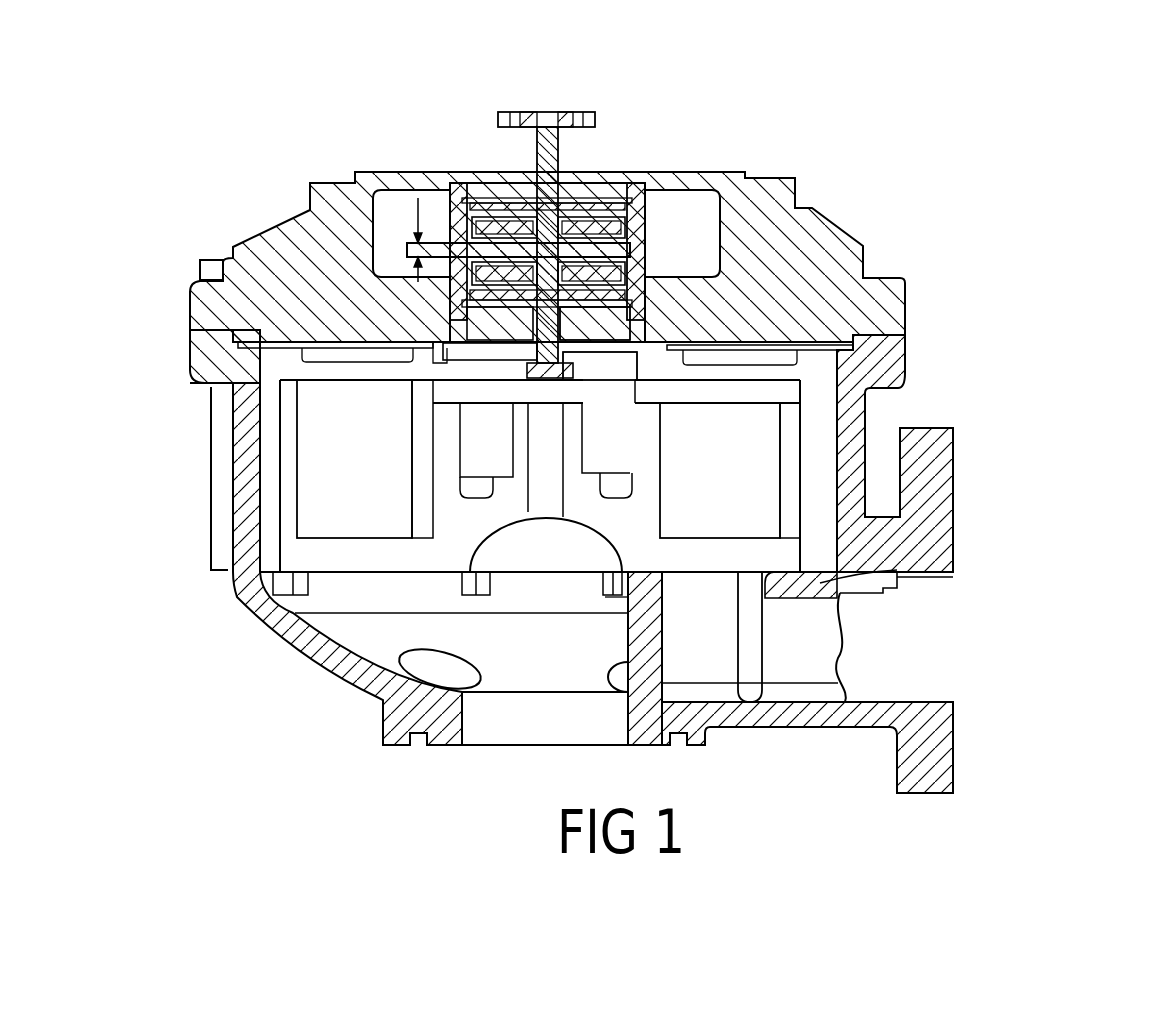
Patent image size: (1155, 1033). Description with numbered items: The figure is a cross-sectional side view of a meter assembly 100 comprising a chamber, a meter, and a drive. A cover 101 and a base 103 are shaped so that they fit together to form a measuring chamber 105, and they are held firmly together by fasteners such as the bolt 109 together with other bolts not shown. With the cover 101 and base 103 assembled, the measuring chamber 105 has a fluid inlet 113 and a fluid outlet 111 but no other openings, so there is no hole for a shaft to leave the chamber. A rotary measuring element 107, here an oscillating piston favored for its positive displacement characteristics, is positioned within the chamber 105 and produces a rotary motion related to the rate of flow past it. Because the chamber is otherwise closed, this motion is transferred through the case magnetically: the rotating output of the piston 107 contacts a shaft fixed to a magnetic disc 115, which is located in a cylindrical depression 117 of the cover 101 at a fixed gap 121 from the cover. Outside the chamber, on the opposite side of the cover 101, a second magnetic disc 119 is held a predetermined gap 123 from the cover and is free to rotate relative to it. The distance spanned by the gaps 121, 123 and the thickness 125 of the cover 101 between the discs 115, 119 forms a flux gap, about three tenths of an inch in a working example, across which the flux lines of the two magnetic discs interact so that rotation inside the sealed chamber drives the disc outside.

The flow meter 100 is at (202, 157).
The cover 101 is at (260, 303).
The base 103 is at (247, 507).
The measuring chamber 105 is at (817, 438).
The rotary measuring element 107 is at (777, 393).
The bolt 109 is at (200, 268).
The fluid outlet 111 is at (937, 645).
The fluid inlet 113 is at (538, 732).
The magnetic disc 115 is at (660, 318).
The cylindrical depression 117 is at (597, 322).
The second magnetic disc 119 is at (600, 238).
The gap 121 is at (470, 252).
The gap 123 is at (590, 275).
The thickness 125 is at (418, 203).